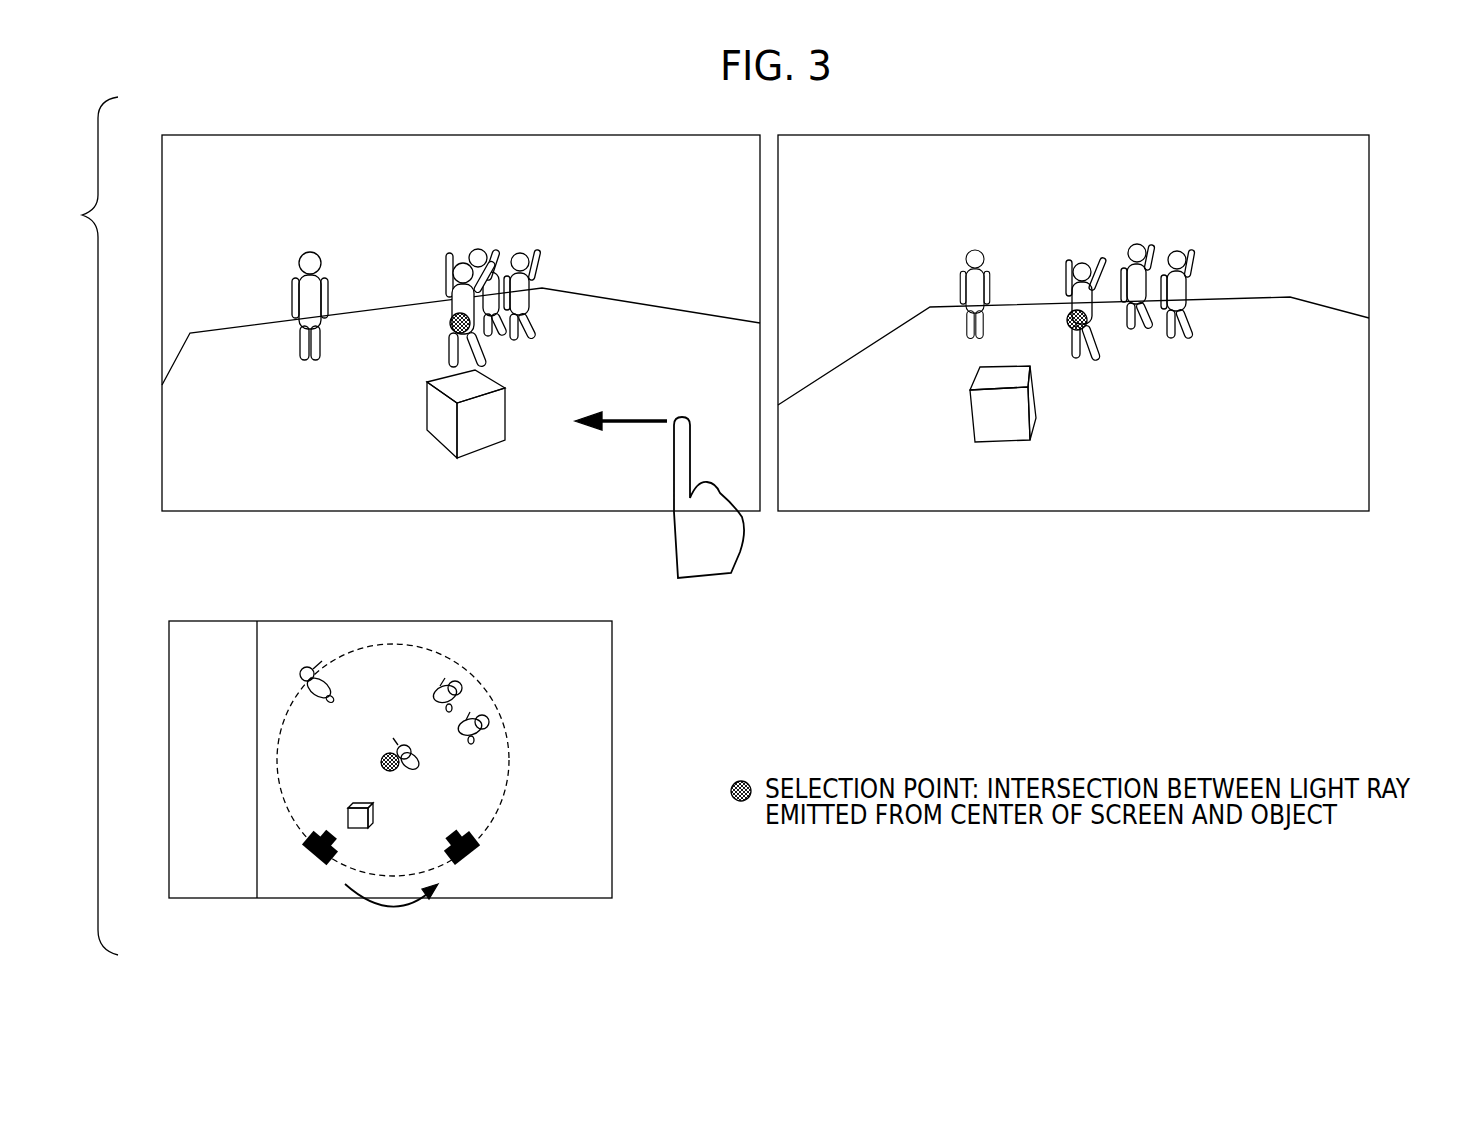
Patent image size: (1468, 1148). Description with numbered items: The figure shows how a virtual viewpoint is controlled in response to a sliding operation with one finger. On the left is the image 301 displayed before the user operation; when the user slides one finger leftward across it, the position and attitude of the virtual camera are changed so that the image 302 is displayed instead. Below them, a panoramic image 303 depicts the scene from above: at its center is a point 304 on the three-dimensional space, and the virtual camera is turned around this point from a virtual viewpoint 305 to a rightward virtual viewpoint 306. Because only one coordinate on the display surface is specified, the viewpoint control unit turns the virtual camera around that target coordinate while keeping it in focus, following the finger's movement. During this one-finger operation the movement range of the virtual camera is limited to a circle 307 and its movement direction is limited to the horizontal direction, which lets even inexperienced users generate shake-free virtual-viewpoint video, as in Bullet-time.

The image before the user operation 301 is at (672, 134).
The image after the user operation 302 is at (1285, 134).
The panoramic image 303 is at (527, 619).
The point on a three-dimensional space 304 is at (399, 768).
The virtual viewpoint 305 is at (343, 848).
The rightward virtual viewpoint 306 is at (477, 842).
The circle 307 is at (487, 688).